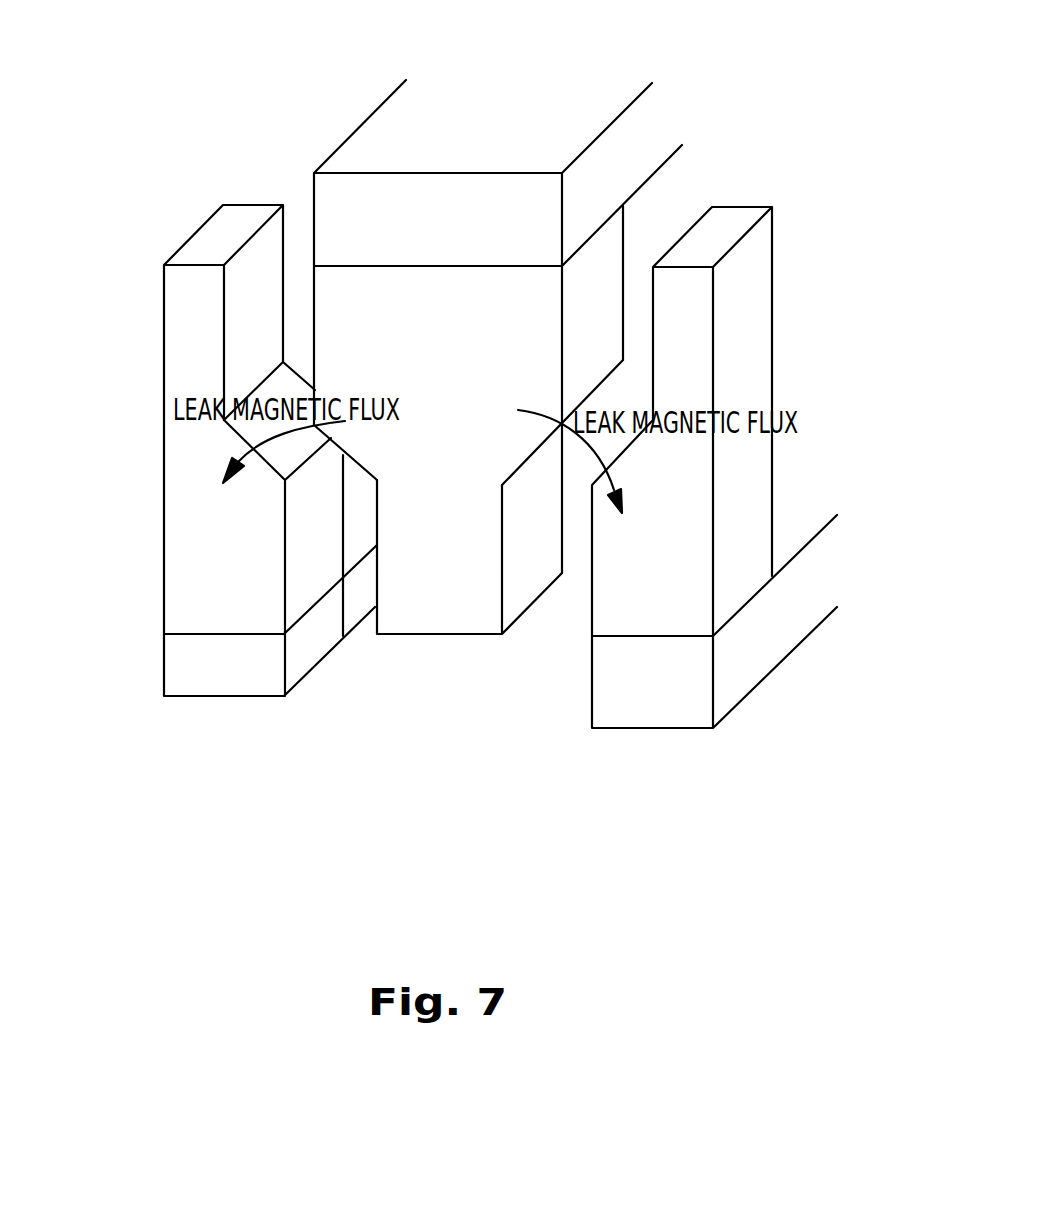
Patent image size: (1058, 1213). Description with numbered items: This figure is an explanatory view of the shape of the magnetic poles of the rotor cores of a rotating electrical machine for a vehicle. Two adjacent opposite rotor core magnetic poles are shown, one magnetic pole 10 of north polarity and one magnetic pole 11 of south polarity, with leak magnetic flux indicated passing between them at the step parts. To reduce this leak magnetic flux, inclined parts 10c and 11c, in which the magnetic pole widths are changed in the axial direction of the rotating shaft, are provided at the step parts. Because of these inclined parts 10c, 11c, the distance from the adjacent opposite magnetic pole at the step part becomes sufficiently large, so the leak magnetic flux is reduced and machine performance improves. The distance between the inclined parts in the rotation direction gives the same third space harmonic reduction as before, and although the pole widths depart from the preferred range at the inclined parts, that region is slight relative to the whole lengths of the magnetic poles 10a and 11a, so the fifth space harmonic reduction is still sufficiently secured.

The rotor core magnetic pole 10 is at (553, 92).
The magnetic pole 10a is at (456, 618).
The inclined part 10c is at (343, 457).
The rotor core magnetic pole 11 is at (195, 675).
The magnetic pole 11a is at (172, 542).
The inclined part 11c is at (277, 458).